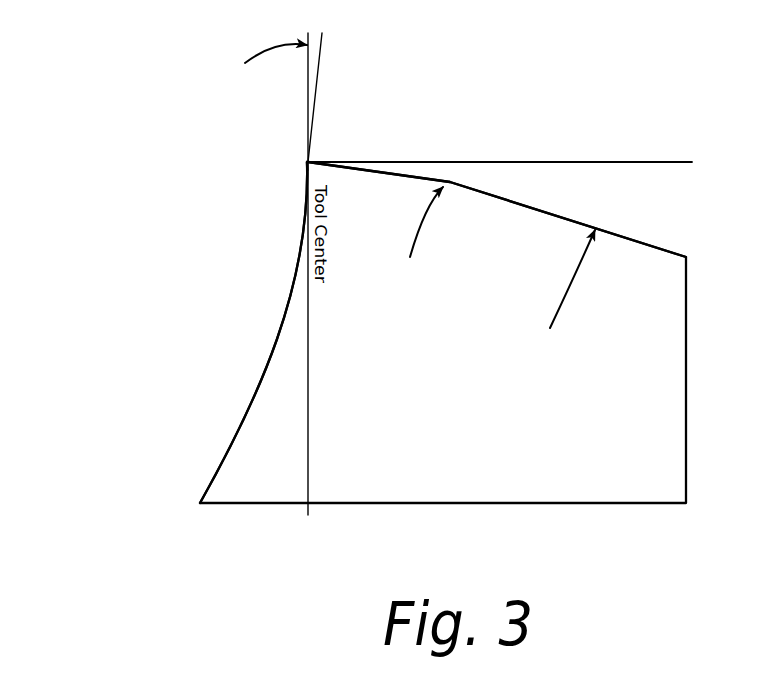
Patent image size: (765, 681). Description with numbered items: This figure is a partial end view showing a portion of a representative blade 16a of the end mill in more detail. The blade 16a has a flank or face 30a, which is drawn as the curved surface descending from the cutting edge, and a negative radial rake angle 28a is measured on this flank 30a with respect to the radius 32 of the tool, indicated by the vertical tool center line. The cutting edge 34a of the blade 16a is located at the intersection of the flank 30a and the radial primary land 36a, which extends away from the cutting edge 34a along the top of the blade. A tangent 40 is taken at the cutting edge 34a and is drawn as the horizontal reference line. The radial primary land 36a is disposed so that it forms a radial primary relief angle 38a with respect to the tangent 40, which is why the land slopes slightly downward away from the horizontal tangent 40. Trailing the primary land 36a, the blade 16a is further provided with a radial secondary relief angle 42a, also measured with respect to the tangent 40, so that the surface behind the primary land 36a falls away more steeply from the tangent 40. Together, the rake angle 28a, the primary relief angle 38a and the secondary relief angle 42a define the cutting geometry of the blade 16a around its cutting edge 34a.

The blade 16a is at (190, 293).
The negative radial rake angle 28a is at (327, 48).
The flank 30a is at (303, 218).
The radius 32 is at (307, 75).
The cutting edge 34a is at (308, 162).
The radial primary land 36a is at (370, 170).
The radial primary relief angle 38a is at (443, 162).
The tangent 40 is at (670, 162).
The radial secondary relief angle 42a is at (602, 162).